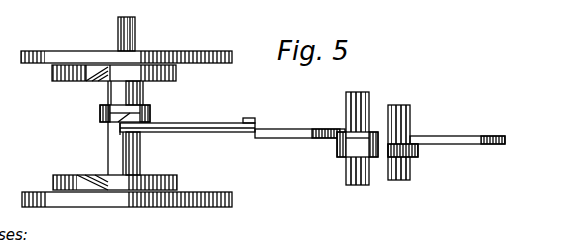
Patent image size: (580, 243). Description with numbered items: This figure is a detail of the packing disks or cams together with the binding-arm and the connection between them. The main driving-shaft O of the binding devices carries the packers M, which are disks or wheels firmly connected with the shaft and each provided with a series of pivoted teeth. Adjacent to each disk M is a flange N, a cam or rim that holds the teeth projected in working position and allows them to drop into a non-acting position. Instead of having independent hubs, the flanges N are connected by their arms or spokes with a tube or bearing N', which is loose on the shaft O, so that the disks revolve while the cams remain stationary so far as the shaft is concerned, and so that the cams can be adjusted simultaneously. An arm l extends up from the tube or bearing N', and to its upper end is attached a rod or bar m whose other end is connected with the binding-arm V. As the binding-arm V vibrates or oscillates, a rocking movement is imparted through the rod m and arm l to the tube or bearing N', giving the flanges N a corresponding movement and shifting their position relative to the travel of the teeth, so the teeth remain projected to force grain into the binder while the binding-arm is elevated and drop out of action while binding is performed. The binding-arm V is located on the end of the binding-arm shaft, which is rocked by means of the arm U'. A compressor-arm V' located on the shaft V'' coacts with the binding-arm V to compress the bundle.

The main driving-shaft O is at (139, 34).
The packers M is at (222, 51).
The flanges N is at (130, 127).
The tube or bearing N' is at (110, 128).
The arm l is at (109, 114).
The rod or bar m is at (212, 123).
The binding-arm V is at (300, 124).
The arm U' is at (349, 138).
The shaft V'' is at (412, 135).
The compressor-arm V' is at (446, 137).